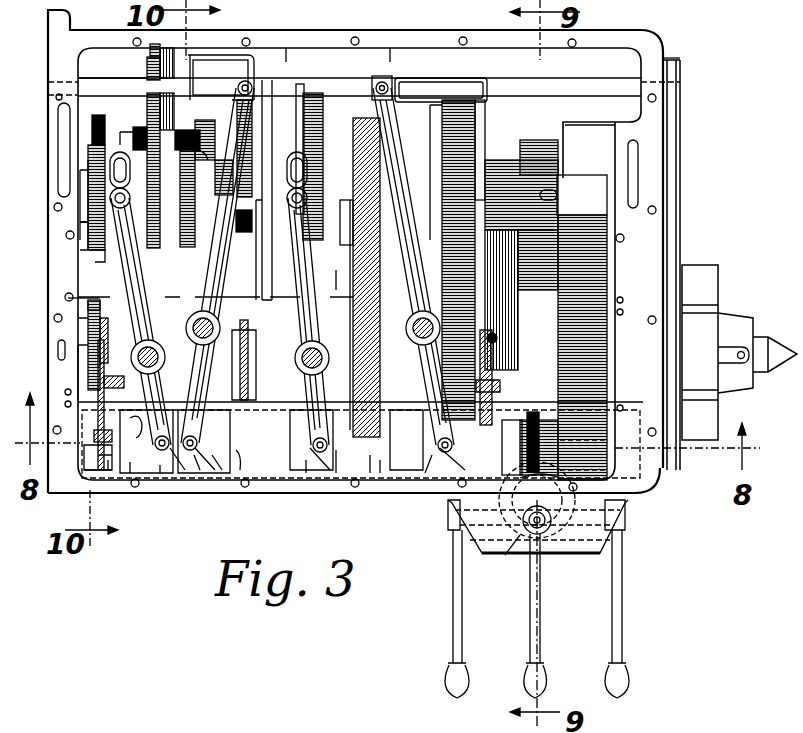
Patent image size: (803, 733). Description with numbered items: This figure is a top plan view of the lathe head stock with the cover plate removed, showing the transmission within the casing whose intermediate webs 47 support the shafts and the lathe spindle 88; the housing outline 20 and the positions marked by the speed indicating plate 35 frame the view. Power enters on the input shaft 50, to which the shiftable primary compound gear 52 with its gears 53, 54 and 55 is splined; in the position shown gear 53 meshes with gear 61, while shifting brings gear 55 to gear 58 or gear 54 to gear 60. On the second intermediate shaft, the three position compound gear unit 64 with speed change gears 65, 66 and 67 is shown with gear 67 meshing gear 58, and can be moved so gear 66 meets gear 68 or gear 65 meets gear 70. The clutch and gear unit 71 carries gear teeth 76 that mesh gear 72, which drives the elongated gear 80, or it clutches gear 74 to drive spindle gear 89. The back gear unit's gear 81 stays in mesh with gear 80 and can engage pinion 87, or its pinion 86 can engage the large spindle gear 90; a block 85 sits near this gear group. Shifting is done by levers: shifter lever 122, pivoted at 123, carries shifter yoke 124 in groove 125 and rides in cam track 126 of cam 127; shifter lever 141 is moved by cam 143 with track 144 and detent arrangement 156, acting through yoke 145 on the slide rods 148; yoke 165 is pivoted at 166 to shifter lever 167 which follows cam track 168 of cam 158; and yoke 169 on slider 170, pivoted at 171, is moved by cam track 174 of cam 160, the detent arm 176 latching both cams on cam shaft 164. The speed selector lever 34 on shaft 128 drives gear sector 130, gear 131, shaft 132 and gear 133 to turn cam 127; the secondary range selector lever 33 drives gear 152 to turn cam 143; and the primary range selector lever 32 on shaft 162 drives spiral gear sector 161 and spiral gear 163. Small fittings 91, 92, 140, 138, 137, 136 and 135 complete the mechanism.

The frame 20 is at (676, 85).
The slide rods 148 is at (572, 90).
The gear 53 is at (228, 52).
The yoke 145 is at (200, 100).
The intermediate webs 47 is at (284, 52).
The shiftable primary compound gear 52 is at (147, 68).
The gear 55 is at (151, 45).
The gear 54 is at (172, 55).
The input shaft 50 is at (110, 80).
The speed change gear 65 is at (160, 240).
The speed change gear 66 is at (188, 250).
The gear 58 is at (90, 122).
The shifter yoke 124 is at (96, 182).
The gear 60 is at (140, 127).
The speed change gear 67 is at (80, 222).
The three position compound gear unit 64 is at (92, 245).
The gear 61 is at (207, 153).
The gear 68 is at (237, 130).
The shifter lever 122 is at (122, 272).
The groove 125 is at (160, 330).
The shifter lever 141 is at (222, 260).
The lathe spindle 88 is at (236, 312).
The pivot 166 is at (302, 270).
The shifter lever 167 is at (304, 280).
The cam track 174 is at (430, 470).
The pivot 171 is at (376, 80).
The gear 89 is at (360, 312).
The yoke 165 is at (297, 140).
The gear 72 is at (323, 166).
The gear teeth 76 is at (338, 230).
The gear 74 is at (350, 280).
The clutch and gear unit 71 is at (268, 228).
The gear 70 is at (244, 240).
The slider 170 is at (472, 86).
The gear 81 is at (468, 144).
The yoke 169 is at (485, 128).
The elongated gear 80 is at (556, 148).
The block 85 is at (575, 190).
The pinion 86 is at (538, 260).
The gear 90 is at (562, 280).
The pivot 123 is at (476, 262).
The pinion 87 is at (480, 324).
The detent arm 176 is at (494, 338).
The gear 152 is at (512, 420).
The spiral gear 163 is at (538, 420).
The gear 131 is at (600, 437).
The gear sector 130 is at (612, 492).
The spiral gear sector 161 is at (505, 480).
The pin 91 is at (75, 299).
The nut 92 is at (88, 322).
The screw 140 is at (88, 350).
The nut 138 is at (104, 382).
The screw 137 is at (96, 410).
The slide block 136 is at (146, 441).
The shaft 132 is at (78, 490).
The plate 135 is at (110, 472).
The cam 127 is at (132, 475).
The cam track 126 is at (162, 475).
The cam 143 is at (198, 475).
The cam track 144 is at (220, 475).
The detent arrangement 156 is at (240, 478).
The cam 158 is at (306, 475).
The cam track 168 is at (336, 475).
The cam shaft 164 is at (370, 476).
The gear 133 is at (380, 490).
The cam 160 is at (428, 476).
The shaft 128 is at (608, 536).
The speed indicating plate 35 is at (548, 540).
The shaft 162 is at (512, 556).
The secondary range selector lever 33 is at (460, 640).
The primary range selector lever 32 is at (540, 636).
The speed selector lever 34 is at (622, 634).